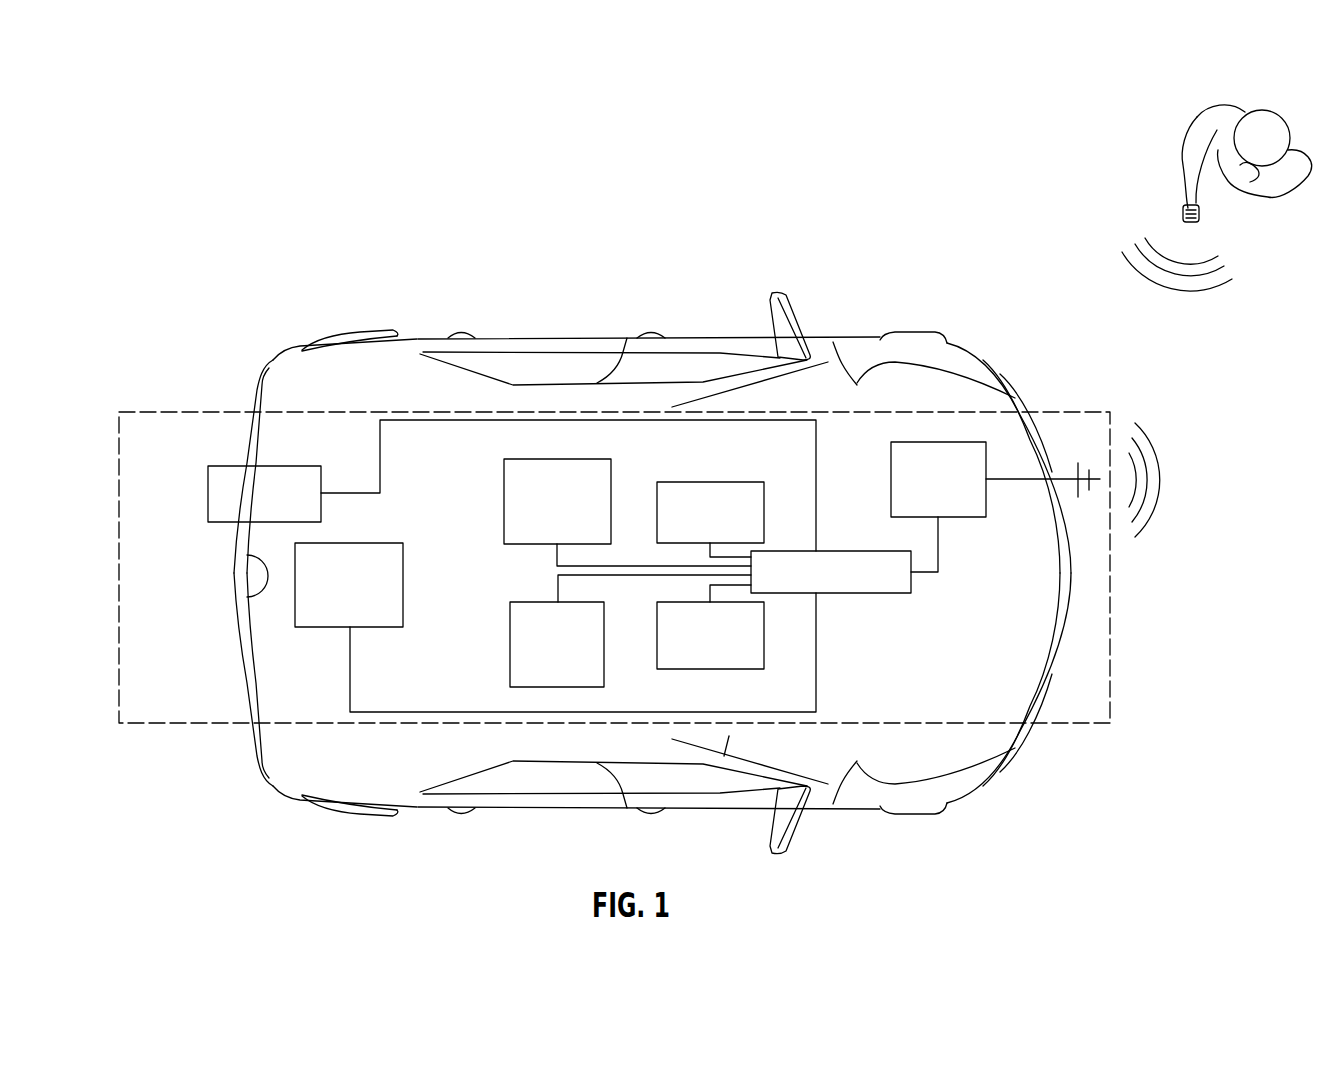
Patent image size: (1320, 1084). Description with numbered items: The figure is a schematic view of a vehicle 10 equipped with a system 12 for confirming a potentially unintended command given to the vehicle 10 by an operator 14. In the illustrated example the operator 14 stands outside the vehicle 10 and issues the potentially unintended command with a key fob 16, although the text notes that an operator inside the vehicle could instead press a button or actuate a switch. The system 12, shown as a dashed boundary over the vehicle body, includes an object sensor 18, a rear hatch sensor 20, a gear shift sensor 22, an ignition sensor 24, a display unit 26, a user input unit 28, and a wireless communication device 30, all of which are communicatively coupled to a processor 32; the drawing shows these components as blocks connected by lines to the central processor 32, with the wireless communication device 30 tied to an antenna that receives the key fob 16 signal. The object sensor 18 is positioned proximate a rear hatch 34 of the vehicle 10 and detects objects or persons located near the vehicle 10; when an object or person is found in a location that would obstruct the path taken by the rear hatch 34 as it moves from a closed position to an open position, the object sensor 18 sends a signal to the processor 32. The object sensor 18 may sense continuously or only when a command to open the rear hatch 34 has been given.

The vehicle 10 is at (592, 336).
The system 12 is at (1112, 570).
The operator 14 is at (1262, 109).
The key fob 16 is at (1202, 221).
The object sensor 18 is at (232, 466).
The rear hatch sensor 20 is at (384, 543).
The gear shift sensor 22 is at (524, 459).
The ignition sensor 24 is at (736, 669).
The display unit 26 is at (740, 482).
The user input unit 28 is at (530, 602).
The wireless communication device 30 is at (963, 517).
The processor 32 is at (889, 594).
The rear hatch 34 is at (247, 556).